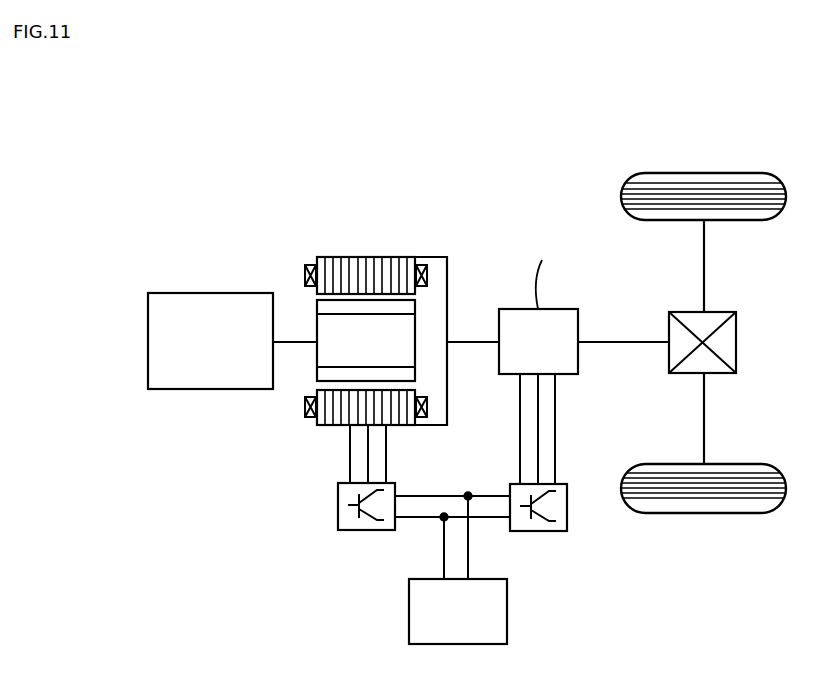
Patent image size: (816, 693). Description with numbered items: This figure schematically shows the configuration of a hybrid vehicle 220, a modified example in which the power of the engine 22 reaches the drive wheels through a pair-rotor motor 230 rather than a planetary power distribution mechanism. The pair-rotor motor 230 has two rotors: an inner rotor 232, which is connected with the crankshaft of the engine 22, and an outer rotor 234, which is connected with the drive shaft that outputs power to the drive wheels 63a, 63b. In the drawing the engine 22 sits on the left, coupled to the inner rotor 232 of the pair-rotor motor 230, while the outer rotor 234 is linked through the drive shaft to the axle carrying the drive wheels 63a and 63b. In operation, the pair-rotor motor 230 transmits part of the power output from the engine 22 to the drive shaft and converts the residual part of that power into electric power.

The hybrid vehicle 220 is at (503, 148).
The engine 22 is at (209, 389).
The pair-rotor motor 230 is at (372, 183).
The inner rotor 232 is at (317, 323).
The outer rotor 234 is at (368, 257).
The drive wheel 63a is at (704, 172).
The drive wheel 63b is at (704, 513).